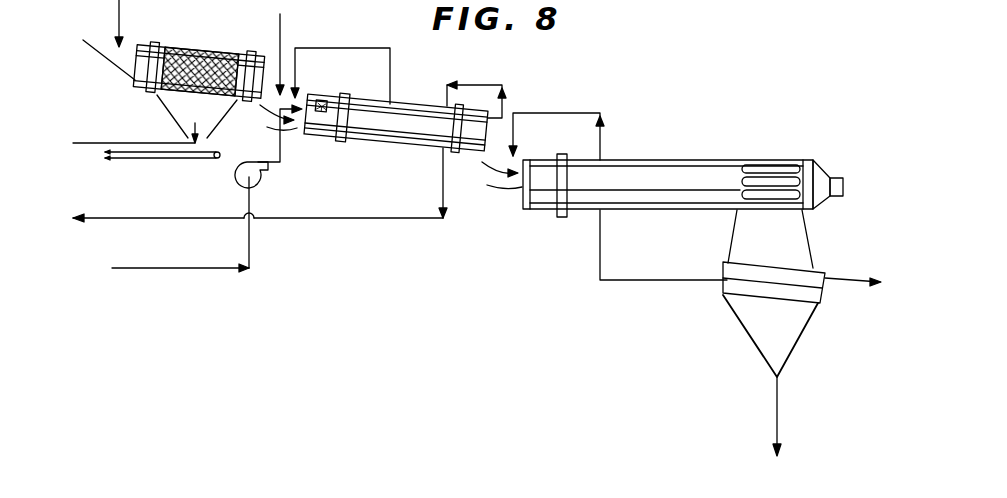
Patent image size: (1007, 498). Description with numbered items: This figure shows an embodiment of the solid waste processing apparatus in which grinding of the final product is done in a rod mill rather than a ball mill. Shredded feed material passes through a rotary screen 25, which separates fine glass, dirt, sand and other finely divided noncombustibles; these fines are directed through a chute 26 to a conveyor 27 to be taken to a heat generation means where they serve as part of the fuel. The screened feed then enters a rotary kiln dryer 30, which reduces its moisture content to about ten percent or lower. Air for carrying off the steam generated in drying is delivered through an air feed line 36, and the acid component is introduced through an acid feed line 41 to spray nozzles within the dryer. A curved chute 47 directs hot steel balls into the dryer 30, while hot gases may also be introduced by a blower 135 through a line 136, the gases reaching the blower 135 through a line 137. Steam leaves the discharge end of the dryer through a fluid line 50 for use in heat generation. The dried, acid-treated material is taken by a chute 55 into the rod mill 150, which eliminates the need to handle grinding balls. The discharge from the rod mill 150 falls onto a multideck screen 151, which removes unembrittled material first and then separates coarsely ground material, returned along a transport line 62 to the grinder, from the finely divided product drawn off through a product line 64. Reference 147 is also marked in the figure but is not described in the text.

The rotary screen 25 is at (207, 28).
The chute 26 is at (175, 117).
The conveyor 27 is at (140, 160).
The rotary kiln dryer 30 is at (378, 110).
The air feed line 36 is at (285, 22).
The acid feed line 41 is at (385, 47).
The curved chute 47 is at (270, 122).
The fluid line 50 is at (485, 85).
The chute 55 is at (495, 185).
The transport line 62 is at (623, 282).
The product line 64 is at (780, 398).
The blower 135 is at (257, 185).
The line 136 is at (283, 153).
The line 137 is at (198, 272).
The reference line 147 is at (748, 8).
The rod mill 150 is at (673, 148).
The multideck screen 151 is at (815, 272).